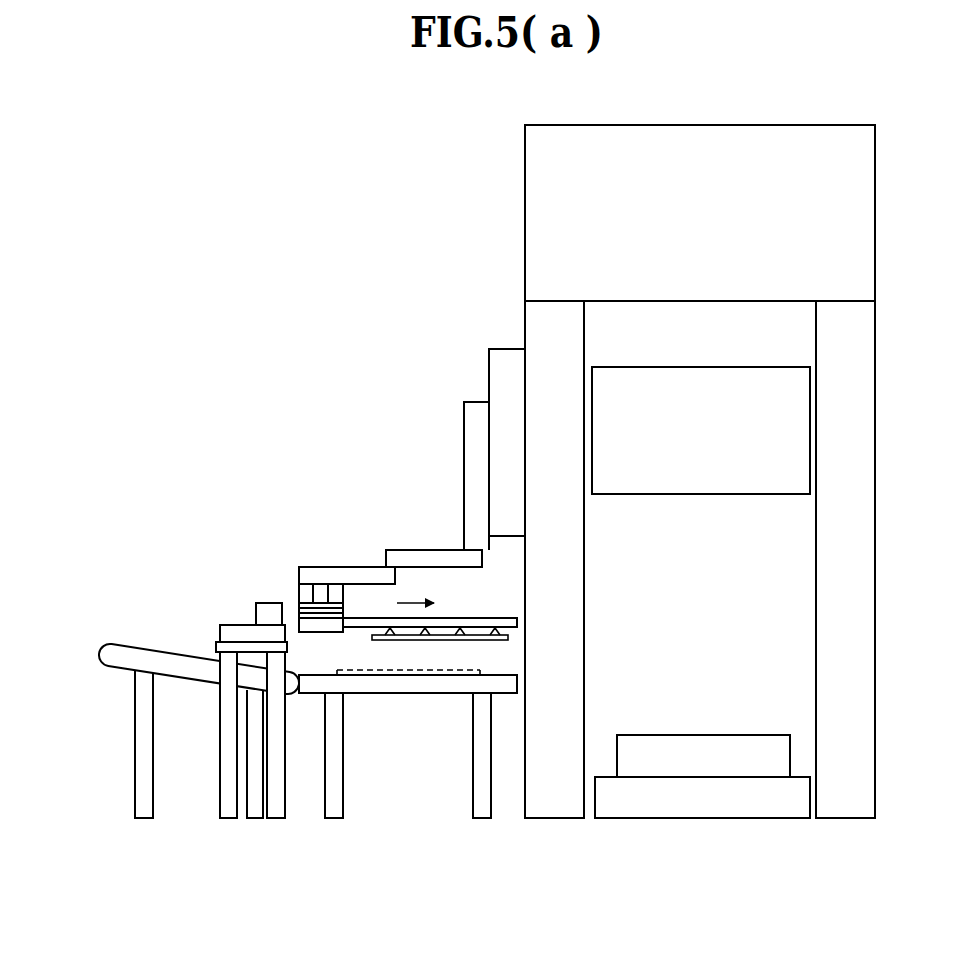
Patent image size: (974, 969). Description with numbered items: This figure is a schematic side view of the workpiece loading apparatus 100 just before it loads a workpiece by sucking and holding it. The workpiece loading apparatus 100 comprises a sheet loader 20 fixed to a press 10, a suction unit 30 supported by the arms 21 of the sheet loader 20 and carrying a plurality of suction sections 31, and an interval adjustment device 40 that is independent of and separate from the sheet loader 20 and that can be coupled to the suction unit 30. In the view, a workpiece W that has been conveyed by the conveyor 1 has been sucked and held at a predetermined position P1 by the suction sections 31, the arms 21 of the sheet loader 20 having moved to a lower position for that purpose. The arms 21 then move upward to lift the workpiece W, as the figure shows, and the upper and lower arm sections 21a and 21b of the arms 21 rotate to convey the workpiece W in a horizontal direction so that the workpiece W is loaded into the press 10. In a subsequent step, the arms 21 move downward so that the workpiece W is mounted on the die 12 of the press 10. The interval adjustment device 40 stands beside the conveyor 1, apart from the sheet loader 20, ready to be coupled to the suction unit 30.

The workpiece loading apparatus 100 is at (403, 261).
The press 10 is at (878, 236).
The die 12 is at (756, 750).
The sheet loader 20 is at (394, 476).
The arms 21 is at (372, 534).
The upper arm section 21a is at (398, 550).
The lower arm section 21b is at (308, 577).
The suction unit 30 is at (475, 618).
The suction sections 31 is at (506, 633).
The workpiece W is at (372, 636).
The predetermined position P1 is at (400, 708).
The conveyor 1 is at (122, 658).
The interval adjustment device 40 is at (222, 592).